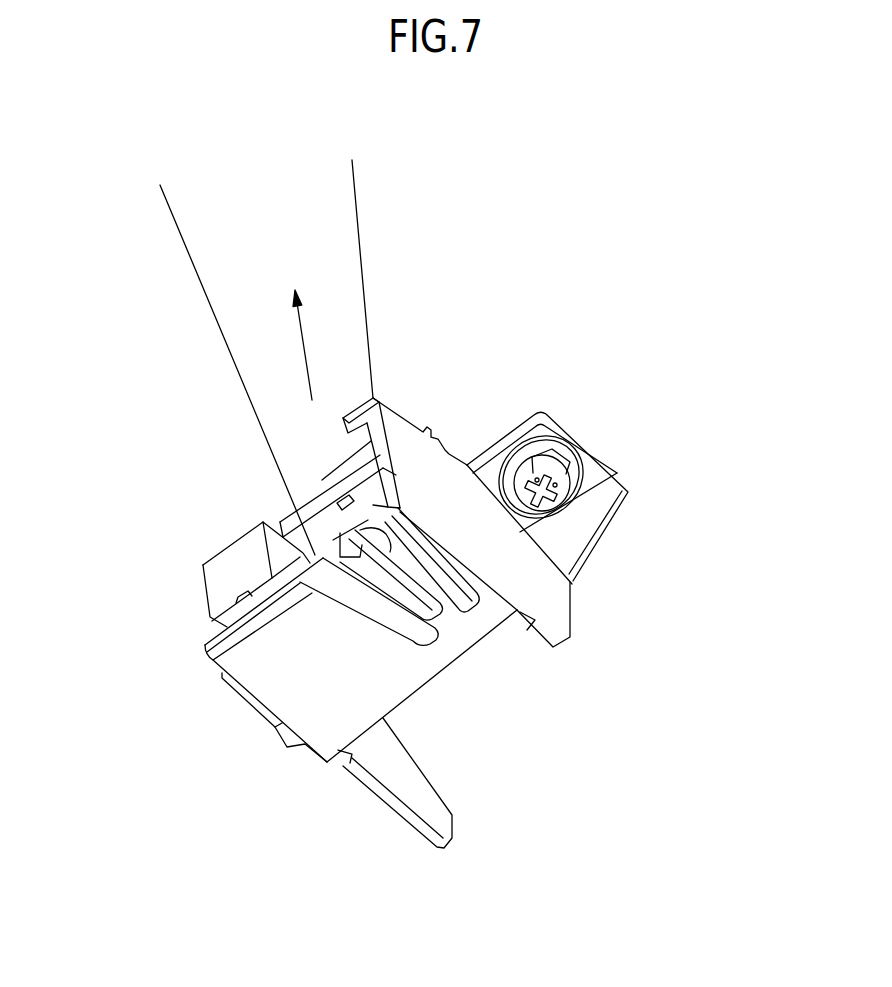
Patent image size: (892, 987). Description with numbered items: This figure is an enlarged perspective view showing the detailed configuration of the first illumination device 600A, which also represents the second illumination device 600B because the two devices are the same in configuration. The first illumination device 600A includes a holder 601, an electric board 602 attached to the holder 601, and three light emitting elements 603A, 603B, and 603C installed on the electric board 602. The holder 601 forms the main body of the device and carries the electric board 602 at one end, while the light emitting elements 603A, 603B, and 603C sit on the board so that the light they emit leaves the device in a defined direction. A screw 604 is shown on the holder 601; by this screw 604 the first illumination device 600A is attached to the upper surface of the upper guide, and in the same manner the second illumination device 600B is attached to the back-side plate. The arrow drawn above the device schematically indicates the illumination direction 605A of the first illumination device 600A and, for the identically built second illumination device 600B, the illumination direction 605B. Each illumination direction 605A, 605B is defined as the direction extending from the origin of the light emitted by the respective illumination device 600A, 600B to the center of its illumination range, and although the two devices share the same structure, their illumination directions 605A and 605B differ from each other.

The first illumination device 600A is at (584, 403).
The second illumination device 600B is at (404, 504).
The holder 601 is at (382, 675).
The electric board 602 is at (305, 546).
The light emitting element 603A is at (320, 490).
The light emitting element 603B is at (375, 396).
The light emitting element 603C is at (391, 466).
The screw 604 is at (553, 513).
The illumination direction 605A is at (302, 320).
The illumination direction 605B is at (302, 345).